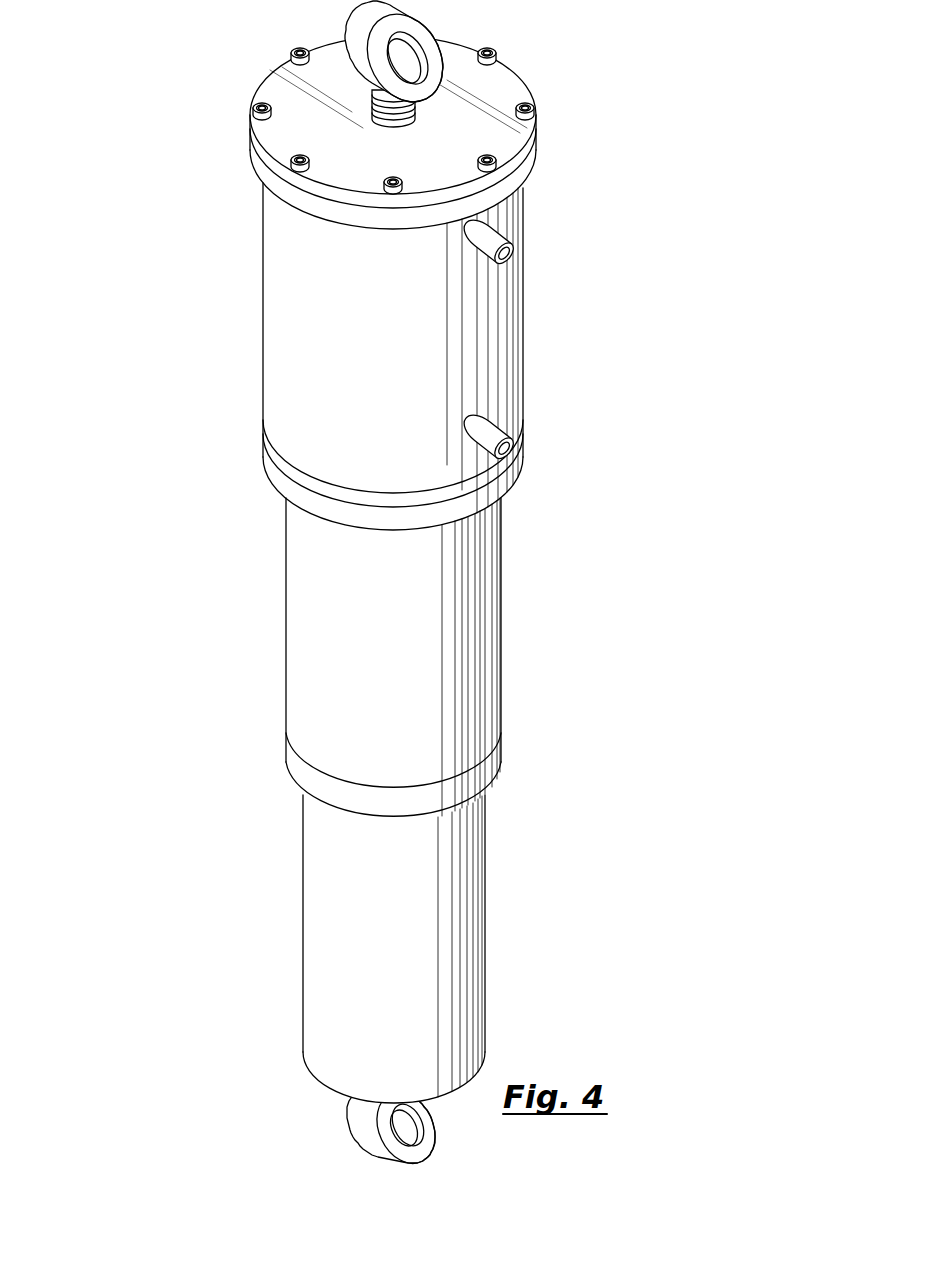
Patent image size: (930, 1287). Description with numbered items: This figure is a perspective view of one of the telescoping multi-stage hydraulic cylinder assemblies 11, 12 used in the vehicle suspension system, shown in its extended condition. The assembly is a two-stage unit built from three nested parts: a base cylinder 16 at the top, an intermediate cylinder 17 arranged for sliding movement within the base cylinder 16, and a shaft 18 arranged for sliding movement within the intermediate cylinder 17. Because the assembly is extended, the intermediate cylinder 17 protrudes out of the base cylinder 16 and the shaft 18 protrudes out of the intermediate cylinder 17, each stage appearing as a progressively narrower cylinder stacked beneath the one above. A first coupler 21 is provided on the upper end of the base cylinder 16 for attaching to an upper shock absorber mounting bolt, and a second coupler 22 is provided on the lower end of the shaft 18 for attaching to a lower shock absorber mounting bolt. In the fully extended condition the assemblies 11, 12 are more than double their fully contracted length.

The hydraulic cylinder assembly 11 is at (325, 587).
The hydraulic cylinder assembly 12 is at (357, 587).
The base cylinder 16 is at (272, 303).
The intermediate cylinder 17 is at (307, 605).
The shaft 18 is at (322, 900).
The first coupler 21 is at (440, 33).
The second coupler 22 is at (356, 1118).